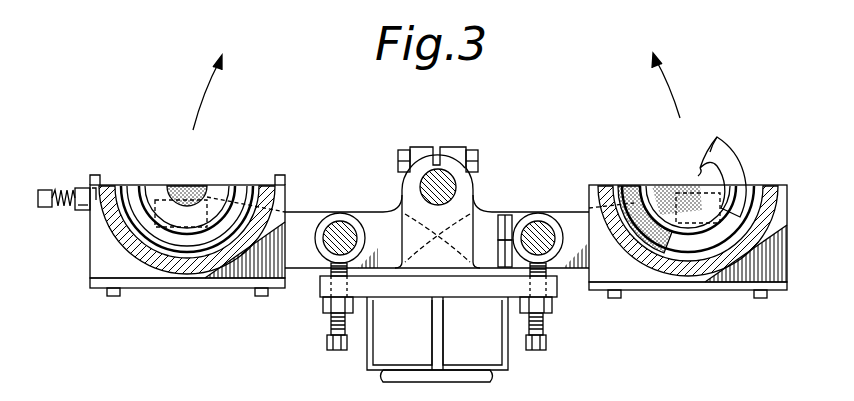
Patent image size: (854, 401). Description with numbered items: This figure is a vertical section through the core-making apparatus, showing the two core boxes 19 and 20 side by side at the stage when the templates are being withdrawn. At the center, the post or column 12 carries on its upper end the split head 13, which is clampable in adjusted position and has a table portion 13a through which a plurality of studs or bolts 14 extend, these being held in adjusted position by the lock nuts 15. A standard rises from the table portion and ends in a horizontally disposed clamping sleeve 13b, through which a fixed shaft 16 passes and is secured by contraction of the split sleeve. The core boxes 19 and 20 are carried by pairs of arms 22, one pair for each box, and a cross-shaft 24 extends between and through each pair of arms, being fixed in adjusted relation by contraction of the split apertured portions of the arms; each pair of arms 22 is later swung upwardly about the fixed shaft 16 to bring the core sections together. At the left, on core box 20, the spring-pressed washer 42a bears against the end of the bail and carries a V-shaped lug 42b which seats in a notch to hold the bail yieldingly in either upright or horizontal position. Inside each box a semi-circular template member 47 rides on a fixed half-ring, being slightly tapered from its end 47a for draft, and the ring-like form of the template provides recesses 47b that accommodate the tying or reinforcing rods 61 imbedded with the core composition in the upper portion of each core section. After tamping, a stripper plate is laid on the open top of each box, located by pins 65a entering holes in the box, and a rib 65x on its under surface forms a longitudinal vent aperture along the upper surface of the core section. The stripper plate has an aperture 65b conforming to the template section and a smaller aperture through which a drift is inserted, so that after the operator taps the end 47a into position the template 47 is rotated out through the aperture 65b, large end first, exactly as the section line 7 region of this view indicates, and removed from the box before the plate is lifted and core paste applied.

The section line 7- 7 is at (200, 168).
The post or column 12 is at (492, 376).
The head 13 is at (510, 360).
The table portion 13a is at (320, 290).
The clamping sleeve 13b is at (477, 220).
The studs or bolts 14 is at (327, 345).
The lock nuts 15 is at (553, 308).
The fixed shaft 16 is at (446, 180).
The core box 19 is at (737, 291).
The core box 20 is at (135, 298).
The arms 22 is at (575, 212).
The cross-shaft 24 is at (342, 232).
The washer 42a is at (74, 211).
The V-shaped lug 42b is at (82, 190).
The template member 47 is at (732, 158).
The template end 47a is at (712, 140).
The recesses 47b is at (697, 172).
The tying or reinforcing rods 61 is at (664, 188).
The pins 65a is at (94, 185).
The aperture 65b is at (236, 185).
The rib 65x is at (200, 185).